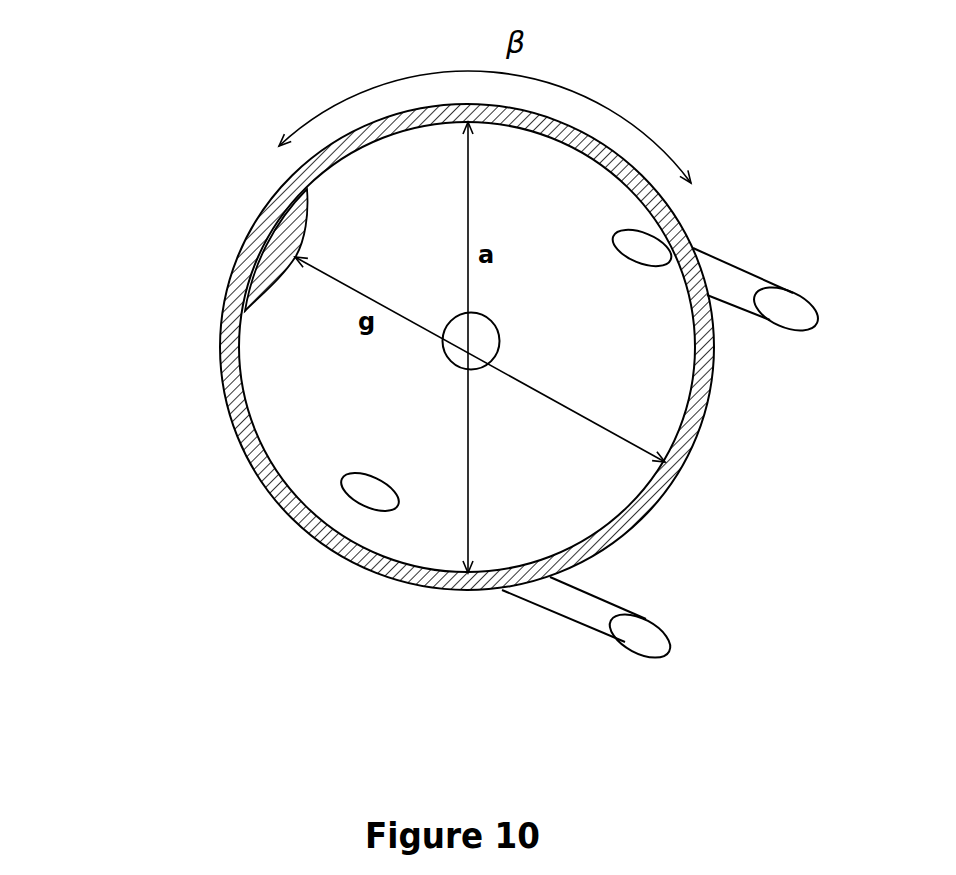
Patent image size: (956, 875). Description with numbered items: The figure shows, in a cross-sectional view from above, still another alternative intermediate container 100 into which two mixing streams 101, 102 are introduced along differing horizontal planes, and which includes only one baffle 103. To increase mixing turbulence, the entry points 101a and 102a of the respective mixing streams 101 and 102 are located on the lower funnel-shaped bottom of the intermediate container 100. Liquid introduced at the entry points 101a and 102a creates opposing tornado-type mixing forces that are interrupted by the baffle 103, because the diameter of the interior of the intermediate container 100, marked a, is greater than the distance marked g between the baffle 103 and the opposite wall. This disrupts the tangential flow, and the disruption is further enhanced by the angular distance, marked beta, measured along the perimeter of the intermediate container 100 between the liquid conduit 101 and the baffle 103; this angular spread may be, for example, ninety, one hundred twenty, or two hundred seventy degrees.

The intermediate container 100 is at (242, 455).
The mixing stream 101 is at (740, 268).
The entry point 101a is at (627, 262).
The mixing stream 102 is at (573, 625).
The entry point 102a is at (367, 472).
The baffle 103 is at (272, 255).